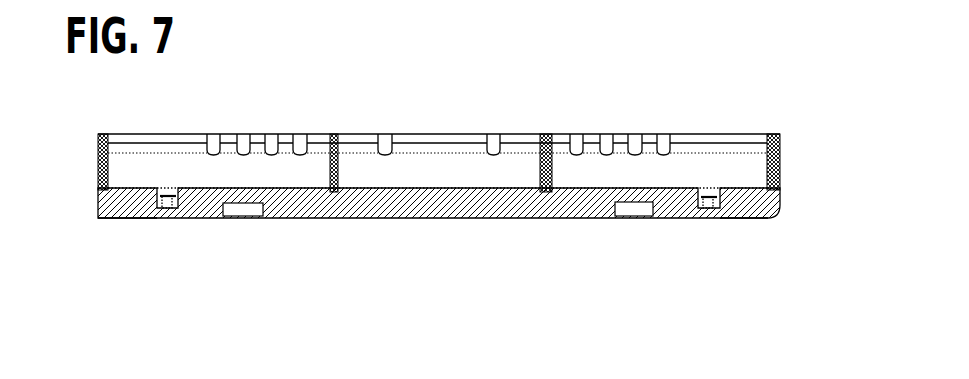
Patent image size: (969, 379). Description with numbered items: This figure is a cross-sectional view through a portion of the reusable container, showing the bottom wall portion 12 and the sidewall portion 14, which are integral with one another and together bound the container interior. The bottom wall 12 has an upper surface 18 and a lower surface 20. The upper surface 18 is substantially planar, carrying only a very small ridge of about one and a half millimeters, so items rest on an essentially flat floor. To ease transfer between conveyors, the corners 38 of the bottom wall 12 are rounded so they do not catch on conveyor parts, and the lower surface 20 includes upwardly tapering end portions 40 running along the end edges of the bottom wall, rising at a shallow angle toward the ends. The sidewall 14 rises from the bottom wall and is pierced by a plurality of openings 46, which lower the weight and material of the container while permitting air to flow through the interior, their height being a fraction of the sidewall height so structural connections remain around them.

The bottom wall portion 12 is at (675, 202).
The sidewall portion 14 is at (780, 158).
The bottom wall upper surface 18 is at (483, 192).
The bottom wall lower surface 20 is at (385, 218).
The corners 38 is at (107, 212).
The upwardly tapering end portions 40 is at (120, 214).
The openings 46 is at (207, 143).